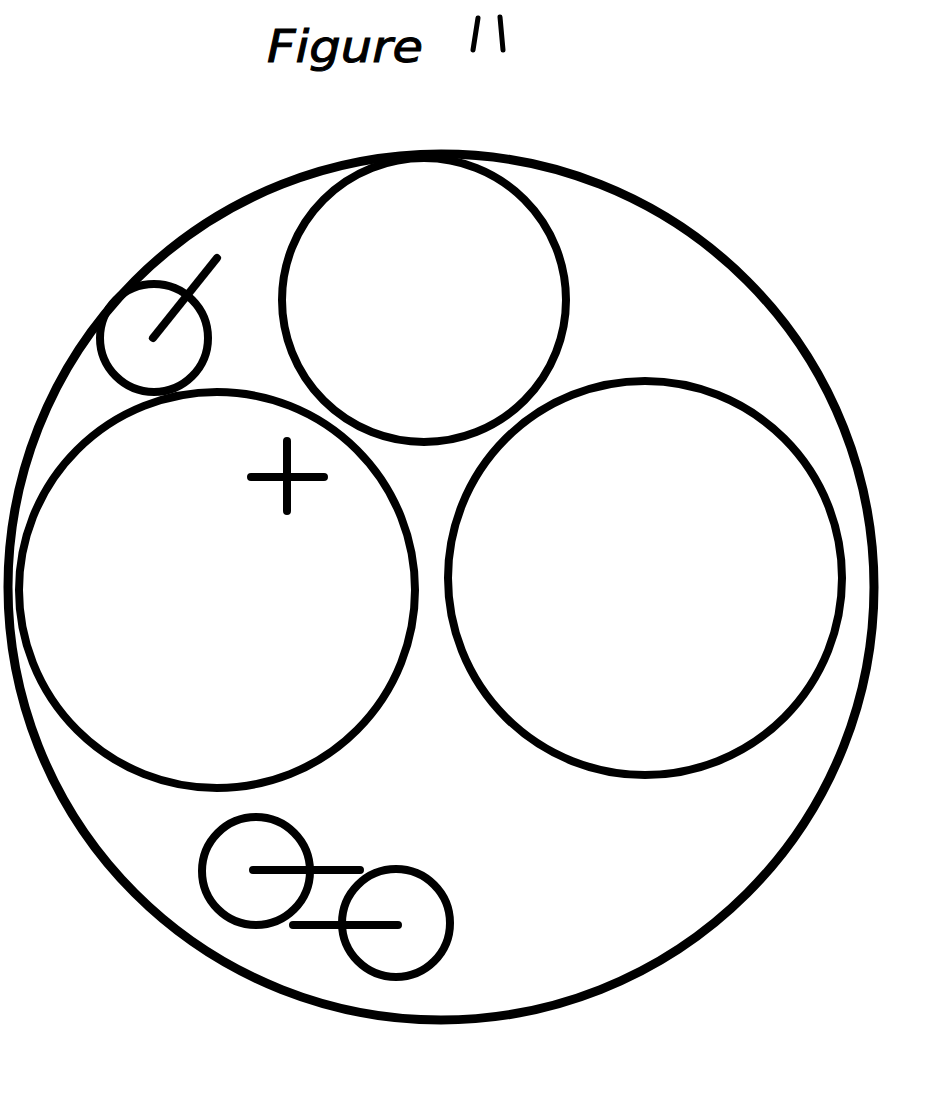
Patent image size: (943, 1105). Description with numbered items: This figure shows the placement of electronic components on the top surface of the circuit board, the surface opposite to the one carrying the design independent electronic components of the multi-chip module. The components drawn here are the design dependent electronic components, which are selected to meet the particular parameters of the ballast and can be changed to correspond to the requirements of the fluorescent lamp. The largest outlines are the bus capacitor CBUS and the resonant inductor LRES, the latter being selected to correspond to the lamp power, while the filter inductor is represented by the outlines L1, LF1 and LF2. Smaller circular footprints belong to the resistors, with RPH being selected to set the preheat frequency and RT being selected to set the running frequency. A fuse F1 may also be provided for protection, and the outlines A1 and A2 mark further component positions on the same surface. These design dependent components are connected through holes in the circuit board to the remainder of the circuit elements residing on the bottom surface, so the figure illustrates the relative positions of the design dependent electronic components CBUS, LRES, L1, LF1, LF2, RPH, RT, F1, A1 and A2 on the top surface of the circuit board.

The lens L1 is at (424, 300).
The bus capacitor CBUS is at (217, 590).
The resonant inductor LRES is at (645, 578).
The actuator A2 is at (188, 330).
The fuse F1 is at (140, 344).
The light fiber LF1 is at (639, 299).
The light fiber LF2 is at (654, 819).
The actuator A1 is at (221, 871).
The running frequency resistor RT is at (420, 900).
The preheat frequency resistor RPH is at (327, 848).